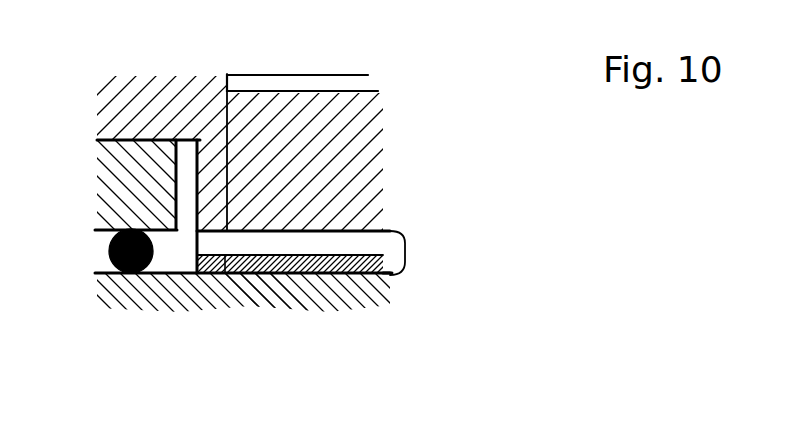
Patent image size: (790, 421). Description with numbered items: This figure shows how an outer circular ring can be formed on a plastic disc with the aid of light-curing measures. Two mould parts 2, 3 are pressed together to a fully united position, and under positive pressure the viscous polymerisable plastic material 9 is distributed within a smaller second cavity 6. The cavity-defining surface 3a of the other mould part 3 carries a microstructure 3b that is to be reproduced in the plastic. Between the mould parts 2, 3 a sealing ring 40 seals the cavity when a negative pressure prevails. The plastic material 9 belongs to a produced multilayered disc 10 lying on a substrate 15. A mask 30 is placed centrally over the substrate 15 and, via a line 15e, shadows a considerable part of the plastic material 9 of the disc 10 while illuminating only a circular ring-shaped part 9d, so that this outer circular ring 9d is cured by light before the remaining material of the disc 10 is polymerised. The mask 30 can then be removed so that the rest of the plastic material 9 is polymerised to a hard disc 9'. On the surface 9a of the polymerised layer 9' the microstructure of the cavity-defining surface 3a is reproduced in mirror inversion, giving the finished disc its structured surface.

The mould part 2 is at (368, 153).
The other mould part 3 is at (117, 356).
The cavity-defining surface 3a is at (263, 274).
The microstructure 3b is at (263, 274).
The second cavity 6 is at (405, 253).
The viscous plastic material 9 is at (225, 206).
The polymerised layer 9' is at (336, 300).
The surface of polymerised layer 9a is at (363, 275).
The outer circular ring 9d is at (212, 273).
The multilayered disc 10 is at (407, 259).
The substrate 15 is at (375, 248).
The line 15e is at (224, 108).
The mask 30 is at (362, 83).
The sealing ring 40 is at (108, 248).